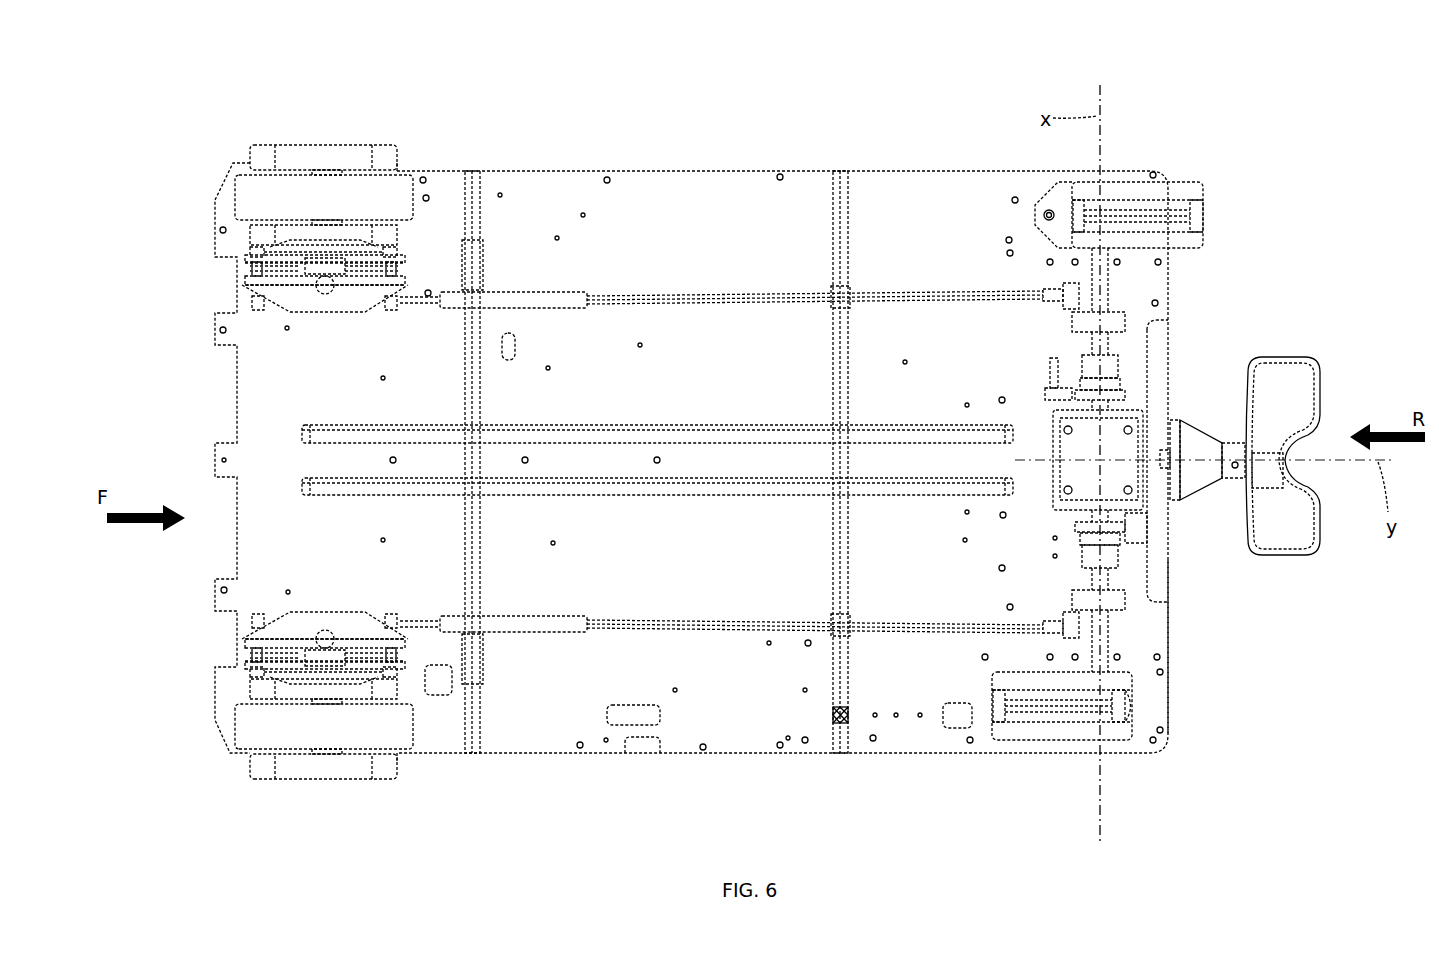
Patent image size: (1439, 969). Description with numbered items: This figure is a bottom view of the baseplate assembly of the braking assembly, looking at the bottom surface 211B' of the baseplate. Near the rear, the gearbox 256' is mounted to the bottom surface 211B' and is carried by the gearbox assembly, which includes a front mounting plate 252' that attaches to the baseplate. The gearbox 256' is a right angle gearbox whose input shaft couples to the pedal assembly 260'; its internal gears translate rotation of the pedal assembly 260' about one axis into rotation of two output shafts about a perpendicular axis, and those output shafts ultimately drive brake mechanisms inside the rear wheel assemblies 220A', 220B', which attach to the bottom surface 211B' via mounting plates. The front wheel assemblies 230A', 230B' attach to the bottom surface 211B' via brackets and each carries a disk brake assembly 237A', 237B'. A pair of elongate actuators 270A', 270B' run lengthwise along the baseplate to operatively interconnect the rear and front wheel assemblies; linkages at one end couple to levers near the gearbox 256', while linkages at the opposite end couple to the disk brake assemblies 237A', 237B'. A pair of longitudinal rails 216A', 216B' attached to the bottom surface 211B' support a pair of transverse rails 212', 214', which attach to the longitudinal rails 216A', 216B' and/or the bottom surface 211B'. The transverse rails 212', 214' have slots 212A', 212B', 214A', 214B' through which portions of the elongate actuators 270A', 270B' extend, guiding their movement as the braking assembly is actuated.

The bottom surface 211B' is at (691, 432).
The transverse rail 214' is at (485, 433).
The transverse rail 212' is at (855, 433).
The slot 212A' is at (876, 266).
The slot 212B' is at (876, 588).
The slot 214A' is at (493, 266).
The slot 214B' is at (493, 586).
The longitudinal rail 216A' is at (657, 401).
The longitudinal rail 216B' is at (657, 518).
The elongate actuator 270A' is at (833, 260).
The elongate actuator 270B' is at (833, 587).
The front wheel assembly 230A' is at (324, 180).
The front wheel assembly 230B' is at (324, 753).
The disk brake assembly 237A' is at (257, 276).
The disk brake assembly 237B' is at (257, 640).
The rear wheel assembly 220A' is at (1153, 169).
The rear wheel assembly 220B' is at (1061, 773).
The gearbox 256' is at (1215, 405).
The front mounting plate 252' is at (1225, 647).
The pedal assembly 260' is at (1289, 449).